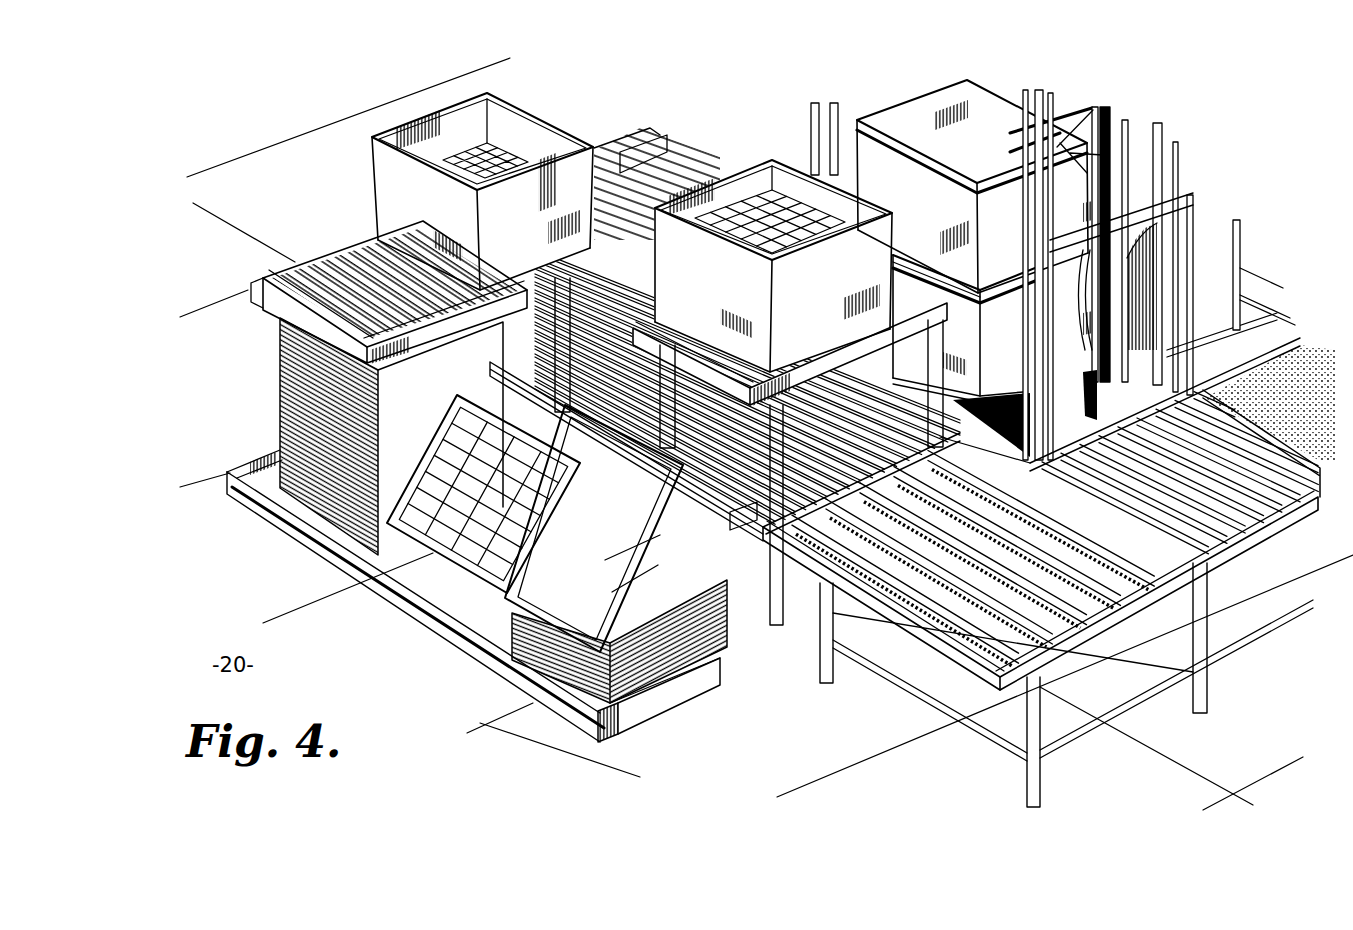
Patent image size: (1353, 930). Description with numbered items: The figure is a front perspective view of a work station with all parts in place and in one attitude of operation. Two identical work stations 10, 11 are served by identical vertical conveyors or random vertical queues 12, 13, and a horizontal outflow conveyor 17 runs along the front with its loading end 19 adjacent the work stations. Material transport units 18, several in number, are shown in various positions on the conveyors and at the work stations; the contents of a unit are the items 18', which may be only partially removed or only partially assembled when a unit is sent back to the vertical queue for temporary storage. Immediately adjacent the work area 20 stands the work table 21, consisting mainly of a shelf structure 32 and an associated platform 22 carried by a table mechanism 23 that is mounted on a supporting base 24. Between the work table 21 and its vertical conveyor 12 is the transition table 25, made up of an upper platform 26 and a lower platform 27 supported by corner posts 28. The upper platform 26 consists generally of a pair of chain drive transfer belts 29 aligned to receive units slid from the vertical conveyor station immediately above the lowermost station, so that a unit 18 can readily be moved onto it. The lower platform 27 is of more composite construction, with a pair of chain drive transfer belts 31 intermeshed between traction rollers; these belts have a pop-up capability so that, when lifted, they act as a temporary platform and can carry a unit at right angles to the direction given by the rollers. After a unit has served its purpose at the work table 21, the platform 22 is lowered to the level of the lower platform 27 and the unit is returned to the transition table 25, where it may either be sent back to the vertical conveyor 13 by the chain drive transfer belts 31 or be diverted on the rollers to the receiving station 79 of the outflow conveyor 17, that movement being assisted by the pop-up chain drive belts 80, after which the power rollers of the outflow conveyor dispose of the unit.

The work station 10 is at (245, 250).
The work station 11 is at (773, 667).
The vertical conveyor 12 is at (805, 117).
The vertical conveyor 13 is at (1250, 222).
The horizontal outflow conveyor 17 is at (1257, 430).
The material transport unit 18 is at (705, 346).
The items 18' is at (594, 320).
The loading end 19 is at (1017, 677).
The work area 20 is at (415, 596).
The work table 21 is at (280, 400).
The platform 22 is at (480, 683).
The table mechanism 23 is at (640, 578).
The supporting base 24 is at (712, 688).
The transition table 25 is at (612, 135).
The upper platform 26 is at (656, 244).
The lower platform 27 is at (500, 423).
The corner posts 28 is at (787, 603).
The chain drive transfer belts 29 is at (650, 163).
The chain drive transfer belts 31 is at (645, 318).
The shelf structure 32 is at (332, 252).
The receiving station 79 is at (1126, 593).
The pop-up chain drive belts 80 is at (1108, 620).